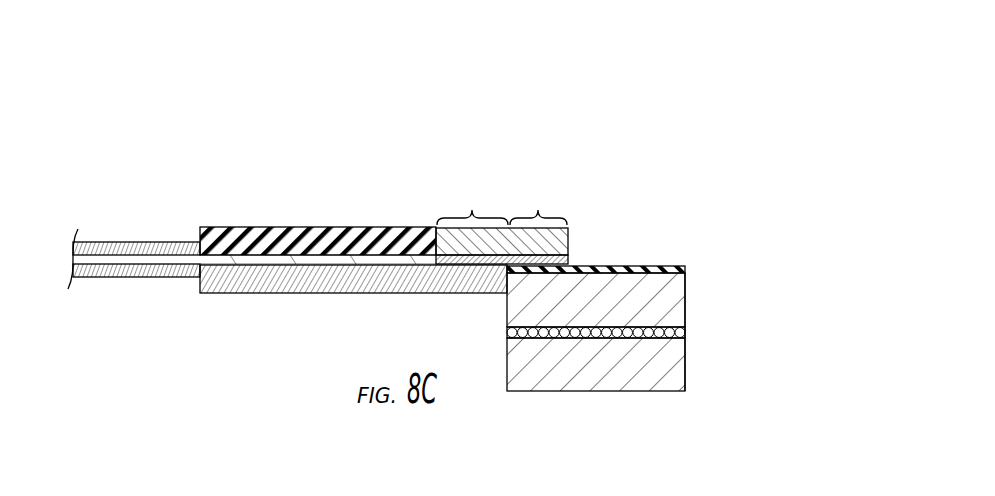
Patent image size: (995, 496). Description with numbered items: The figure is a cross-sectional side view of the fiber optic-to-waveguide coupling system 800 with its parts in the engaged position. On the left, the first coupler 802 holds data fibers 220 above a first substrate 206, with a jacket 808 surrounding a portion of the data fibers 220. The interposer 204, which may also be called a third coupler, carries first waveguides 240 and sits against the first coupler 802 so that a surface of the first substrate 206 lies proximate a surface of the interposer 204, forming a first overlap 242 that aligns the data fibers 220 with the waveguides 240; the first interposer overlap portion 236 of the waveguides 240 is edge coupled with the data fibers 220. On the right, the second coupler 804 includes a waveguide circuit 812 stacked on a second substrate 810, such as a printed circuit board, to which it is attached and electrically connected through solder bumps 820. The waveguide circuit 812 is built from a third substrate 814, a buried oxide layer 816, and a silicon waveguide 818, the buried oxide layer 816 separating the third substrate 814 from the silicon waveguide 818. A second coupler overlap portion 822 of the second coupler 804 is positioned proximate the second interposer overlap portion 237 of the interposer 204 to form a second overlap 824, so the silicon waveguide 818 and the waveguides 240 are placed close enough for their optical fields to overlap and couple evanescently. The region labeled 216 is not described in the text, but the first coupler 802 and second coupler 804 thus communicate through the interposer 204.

The fiber optic-to-waveguide coupling system 800 is at (649, 111).
The first coupler 802 is at (246, 226).
The second coupler 804 is at (600, 351).
The jacket 808 is at (130, 242).
The data fibers 220 is at (332, 260).
The first substrate 206 is at (290, 293).
The interposer 204 is at (568, 238).
The first waveguides 240 is at (568, 258).
The first region 216 is at (444, 176).
The first interposer overlap portion 236 is at (444, 176).
The first overlap 242 is at (472, 210).
The second interposer overlap portion 237 is at (566, 176).
The second coupler overlap portion 822 is at (566, 176).
The second overlap 824 is at (598, 155).
The silicon waveguide 818 is at (685, 266).
The buried oxide layer 816 is at (686, 274).
The third substrate 814 is at (686, 291).
The waveguide circuit 812 is at (687, 308).
The solder bumps 820 is at (511, 333).
The second substrate 810 is at (686, 372).